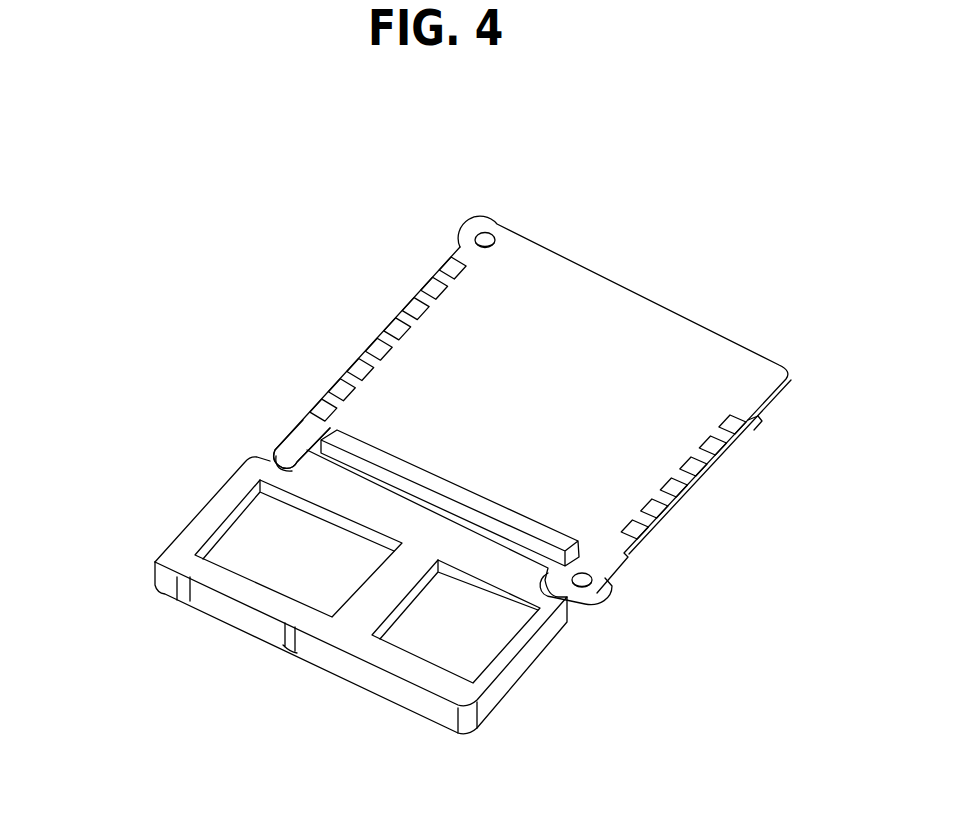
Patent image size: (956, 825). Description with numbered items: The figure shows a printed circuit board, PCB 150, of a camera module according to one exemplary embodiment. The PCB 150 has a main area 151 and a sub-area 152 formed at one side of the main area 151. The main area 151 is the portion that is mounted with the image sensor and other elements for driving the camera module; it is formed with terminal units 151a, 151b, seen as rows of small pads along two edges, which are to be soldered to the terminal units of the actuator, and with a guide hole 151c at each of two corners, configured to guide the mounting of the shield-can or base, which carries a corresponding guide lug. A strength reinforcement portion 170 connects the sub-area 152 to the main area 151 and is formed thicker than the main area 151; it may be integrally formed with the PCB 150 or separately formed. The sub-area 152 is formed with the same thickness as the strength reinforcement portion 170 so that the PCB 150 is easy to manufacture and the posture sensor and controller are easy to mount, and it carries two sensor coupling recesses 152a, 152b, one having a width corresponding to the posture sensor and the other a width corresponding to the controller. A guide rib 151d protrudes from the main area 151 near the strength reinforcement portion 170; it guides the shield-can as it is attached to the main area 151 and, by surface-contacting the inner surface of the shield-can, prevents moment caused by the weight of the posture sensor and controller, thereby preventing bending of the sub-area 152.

The PCB 150 is at (182, 132).
The main area 151 is at (623, 318).
The terminal unit 151a is at (398, 325).
The terminal unit 151b is at (673, 487).
The guide hole 151c is at (486, 236).
The guide rib 151d is at (328, 432).
The sub-area 152 is at (207, 515).
The sensor coupling recess 152a is at (478, 645).
The sensor coupling recess 152b is at (240, 558).
The strength reinforcement portion 170 is at (310, 467).